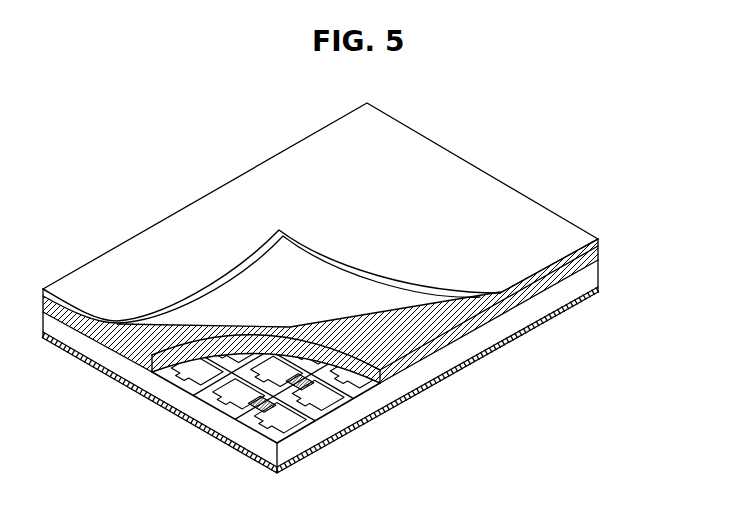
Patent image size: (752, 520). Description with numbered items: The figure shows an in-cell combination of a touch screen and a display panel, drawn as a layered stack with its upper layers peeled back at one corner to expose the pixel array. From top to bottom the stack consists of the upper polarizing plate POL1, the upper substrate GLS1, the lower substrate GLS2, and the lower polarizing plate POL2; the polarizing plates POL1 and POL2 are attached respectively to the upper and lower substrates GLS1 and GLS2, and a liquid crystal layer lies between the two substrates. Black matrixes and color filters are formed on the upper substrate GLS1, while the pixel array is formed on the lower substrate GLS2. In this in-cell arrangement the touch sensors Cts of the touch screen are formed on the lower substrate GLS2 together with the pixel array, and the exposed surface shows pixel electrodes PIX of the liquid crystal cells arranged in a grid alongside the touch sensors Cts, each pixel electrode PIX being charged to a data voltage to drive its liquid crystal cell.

The upper polarizing plate POL1 is at (600, 240).
The upper substrate GLS1 is at (600, 252).
The lower substrate GLS2 is at (593, 272).
The lower polarizing plate POL2 is at (600, 290).
The pixel electrode PIX is at (267, 437).
The touch sensors Cts is at (253, 412).